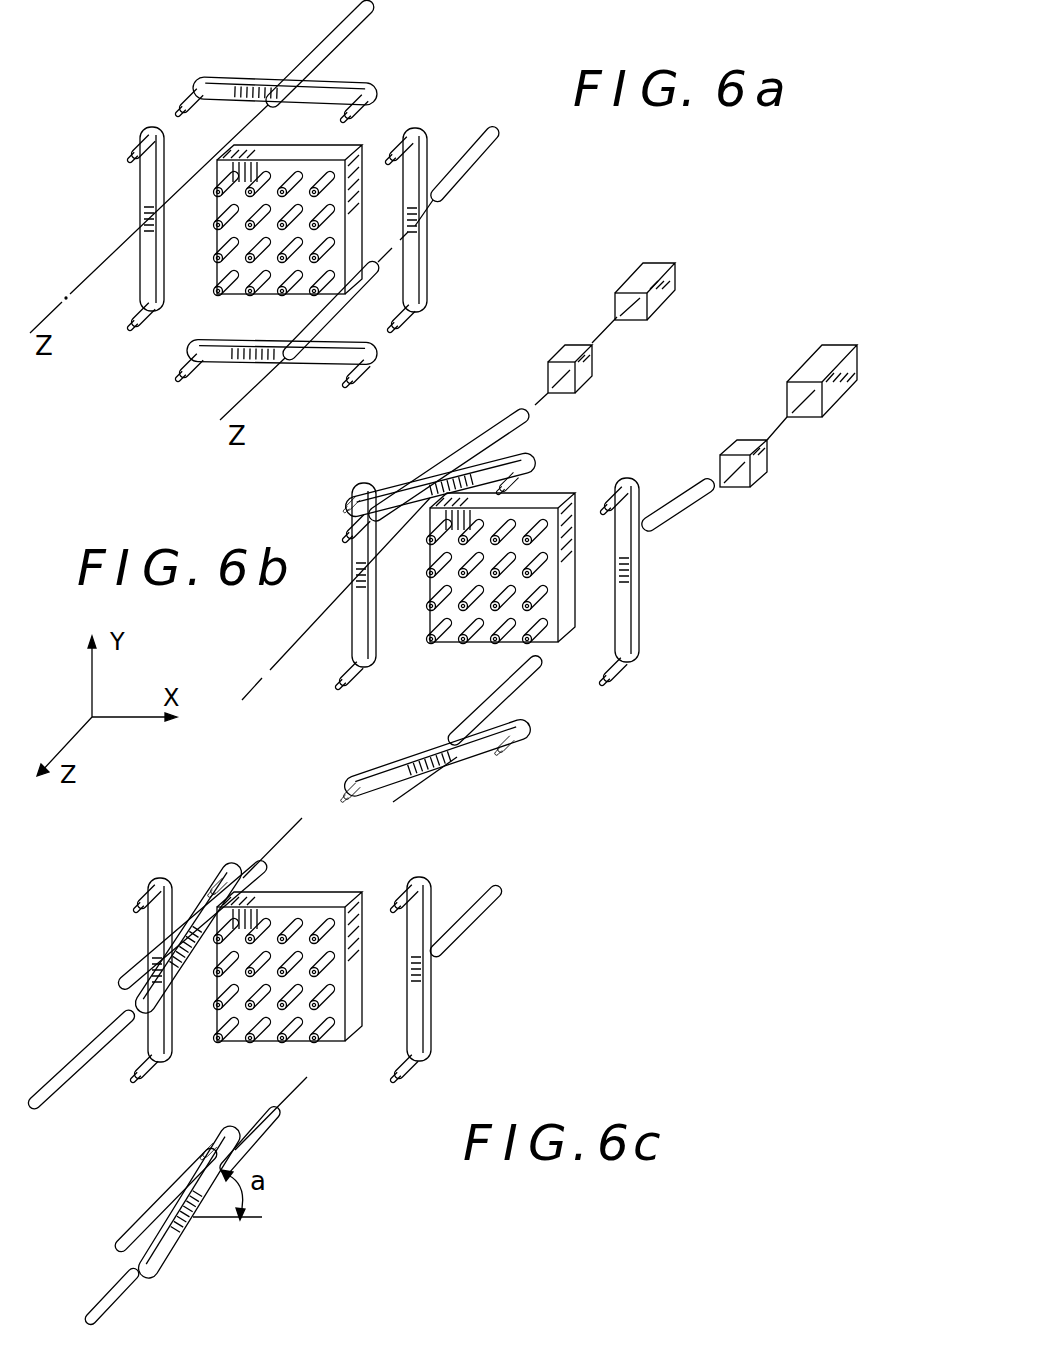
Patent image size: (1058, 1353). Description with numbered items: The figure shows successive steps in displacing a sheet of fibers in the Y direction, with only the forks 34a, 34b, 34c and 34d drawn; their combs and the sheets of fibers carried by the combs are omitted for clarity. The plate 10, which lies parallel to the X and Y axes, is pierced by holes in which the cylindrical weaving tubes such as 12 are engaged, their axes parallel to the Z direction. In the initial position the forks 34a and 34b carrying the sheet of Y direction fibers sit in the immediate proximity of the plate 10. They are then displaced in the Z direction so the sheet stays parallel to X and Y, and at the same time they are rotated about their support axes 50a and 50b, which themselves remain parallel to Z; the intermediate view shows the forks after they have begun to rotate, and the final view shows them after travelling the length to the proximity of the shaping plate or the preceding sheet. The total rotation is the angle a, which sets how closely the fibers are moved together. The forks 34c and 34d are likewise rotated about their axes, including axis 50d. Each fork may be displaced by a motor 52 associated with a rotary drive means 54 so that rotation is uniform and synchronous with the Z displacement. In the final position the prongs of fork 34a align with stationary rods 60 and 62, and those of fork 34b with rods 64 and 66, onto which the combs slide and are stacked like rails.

In FIG. 6A, the plate 10 is at (302, 155).
In FIG. 6B, the plate 10 is at (548, 505).
In FIG. 6C, the plate 10 is at (320, 905).
In FIG. 6A, the weaving tube 12 is at (212, 300).
In FIG. 6A, the fork 34a is at (347, 78).
In FIG. 6B, the fork 34a is at (405, 492).
In FIG. 6C, the fork 34a is at (220, 867).
In FIG. 6A, the fork 34b is at (316, 364).
In FIG. 6B, the fork 34b is at (403, 760).
In FIG. 6C, the fork 34b is at (170, 1245).
In FIG. 6A, the fork 34c is at (145, 205).
In FIG. 6B, the fork 34c is at (355, 652).
In FIG. 6C, the fork 34c is at (150, 920).
In FIG. 6A, the fork 34d is at (418, 283).
In FIG. 6B, the fork 34d is at (638, 630).
In FIG. 6C, the fork 34d is at (420, 1010).
In FIG. 6A, the support axis 50a is at (322, 43).
In FIG. 6A, the support axis 50b is at (307, 317).
In FIG. 6A, the axis 50d is at (478, 163).
In FIG. 6B, the axis 50d is at (655, 515).
In FIG. 6B, the motor 52 is at (655, 290).
In FIG. 6B, the rotary drive means 54 is at (590, 380).
In FIG. 6C, the stationary rod 60 is at (140, 960).
In FIG. 6C, the stationary rod 62 is at (87, 1053).
In FIG. 6C, the stationary rod 64 is at (165, 1200).
In FIG. 6C, the stationary rod 66 is at (103, 1300).